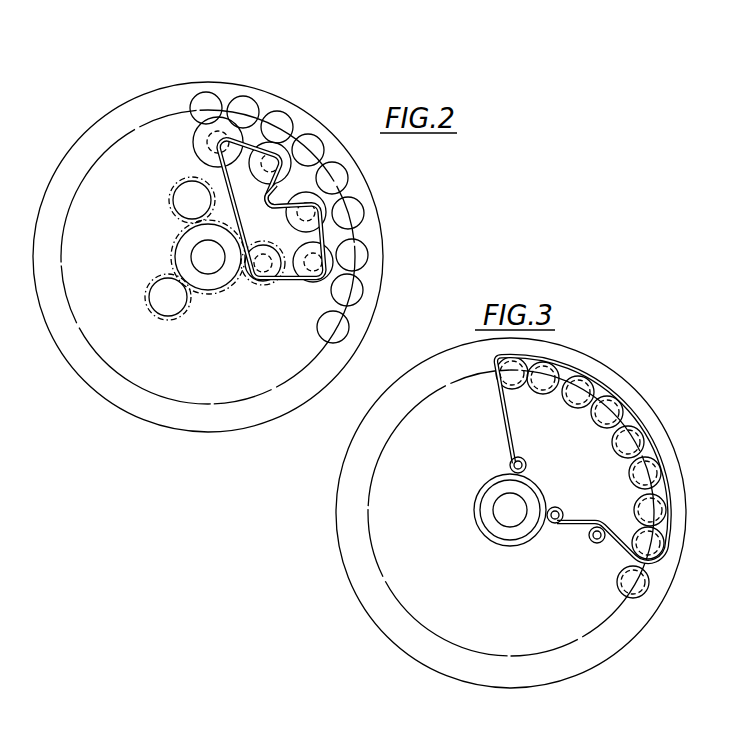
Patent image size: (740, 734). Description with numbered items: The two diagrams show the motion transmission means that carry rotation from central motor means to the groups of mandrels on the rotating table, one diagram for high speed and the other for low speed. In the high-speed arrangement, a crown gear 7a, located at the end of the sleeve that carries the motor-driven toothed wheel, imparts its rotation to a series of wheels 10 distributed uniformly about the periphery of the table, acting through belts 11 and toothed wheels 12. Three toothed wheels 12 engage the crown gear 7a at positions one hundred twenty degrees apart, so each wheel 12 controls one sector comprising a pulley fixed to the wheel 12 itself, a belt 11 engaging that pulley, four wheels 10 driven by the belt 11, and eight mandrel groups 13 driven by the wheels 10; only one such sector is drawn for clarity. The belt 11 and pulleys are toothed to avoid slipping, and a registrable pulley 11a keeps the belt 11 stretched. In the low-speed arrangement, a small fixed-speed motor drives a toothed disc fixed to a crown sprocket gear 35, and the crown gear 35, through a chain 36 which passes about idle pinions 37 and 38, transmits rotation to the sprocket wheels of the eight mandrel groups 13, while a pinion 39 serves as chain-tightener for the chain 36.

In FIG. 2, the crown gear 7a is at (182, 253).
In FIG. 2, the wheels 10 is at (197, 147).
In FIG. 2, the belt 11 is at (285, 283).
In FIG. 2, the registrable pulley 11a is at (270, 198).
In FIG. 2, the toothed wheels 12 is at (260, 287).
In FIG. 2, the mandrel groups 13 is at (190, 108).
In FIG. 3, the crown sprocket gear 35 is at (497, 533).
In FIG. 3, the chain 36 is at (508, 457).
In FIG. 3, the idle pinion 37 is at (553, 523).
In FIG. 3, the idle pinion 38 is at (510, 472).
In FIG. 3, the pinion 39 is at (595, 543).